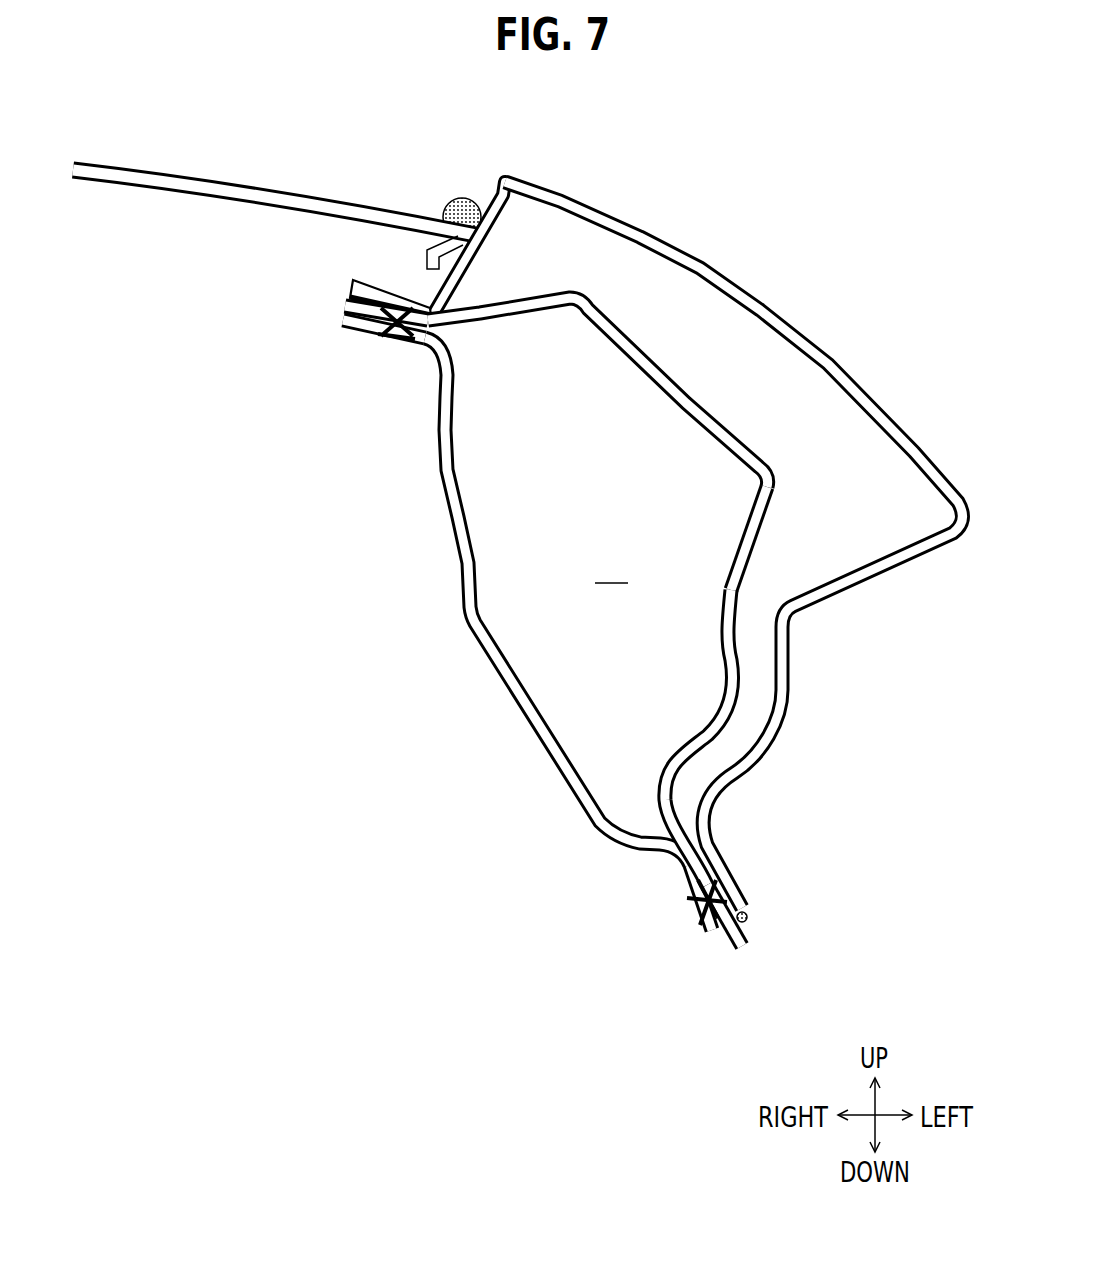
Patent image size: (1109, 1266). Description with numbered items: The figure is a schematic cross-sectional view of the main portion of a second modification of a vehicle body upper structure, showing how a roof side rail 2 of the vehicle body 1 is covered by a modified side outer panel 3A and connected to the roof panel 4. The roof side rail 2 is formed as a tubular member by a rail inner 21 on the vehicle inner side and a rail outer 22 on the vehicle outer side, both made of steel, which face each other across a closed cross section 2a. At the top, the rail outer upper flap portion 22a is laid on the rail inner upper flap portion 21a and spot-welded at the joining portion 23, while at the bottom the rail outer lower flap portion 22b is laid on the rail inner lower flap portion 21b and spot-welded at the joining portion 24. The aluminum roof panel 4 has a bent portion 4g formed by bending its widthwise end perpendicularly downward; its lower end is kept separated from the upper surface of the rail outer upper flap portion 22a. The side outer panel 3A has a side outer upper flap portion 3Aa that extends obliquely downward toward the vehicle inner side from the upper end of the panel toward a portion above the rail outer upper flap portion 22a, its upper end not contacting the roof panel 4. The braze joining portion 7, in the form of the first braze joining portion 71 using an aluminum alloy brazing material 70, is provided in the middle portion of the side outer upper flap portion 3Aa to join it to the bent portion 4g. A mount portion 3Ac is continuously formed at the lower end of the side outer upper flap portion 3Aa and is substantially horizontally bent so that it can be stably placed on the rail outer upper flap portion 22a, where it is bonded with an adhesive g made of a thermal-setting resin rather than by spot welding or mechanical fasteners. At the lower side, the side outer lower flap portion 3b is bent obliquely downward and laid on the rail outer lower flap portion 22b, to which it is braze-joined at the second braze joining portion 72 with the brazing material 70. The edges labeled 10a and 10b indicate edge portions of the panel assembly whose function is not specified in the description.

The vehicle body 1 is at (845, 195).
The upper edge portion of panel 10a is at (160, 162).
The rear edge portion 10b is at (758, 541).
The roof panel 4 is at (274, 194).
The bent portion 4g is at (424, 256).
The braze joining portion 7 is at (625, 545).
The first braze joining portion 71 is at (441, 183).
The second braze joining portion 72 is at (764, 920).
The brazing material 70 is at (625, 545).
The side outer panel 3A is at (615, 545).
The side outer upper flap portion 3Aa is at (478, 262).
The mount portion 3Ac is at (383, 290).
The side outer lower flap portion 3b is at (740, 890).
The adhesive g is at (347, 293).
The roof side rail 2 is at (537, 668).
The closed cross section 2a is at (611, 567).
The rail inner 21 is at (515, 625).
The rail inner upper flap portion 21a is at (363, 328).
The rail inner lower flap portion 21b is at (690, 893).
The rail outer 22 is at (537, 668).
The rail outer upper flap portion 22a is at (347, 307).
The rail outer lower flap portion 22b is at (733, 947).
The joining portion 23 is at (393, 340).
The joining portion 24 is at (727, 880).